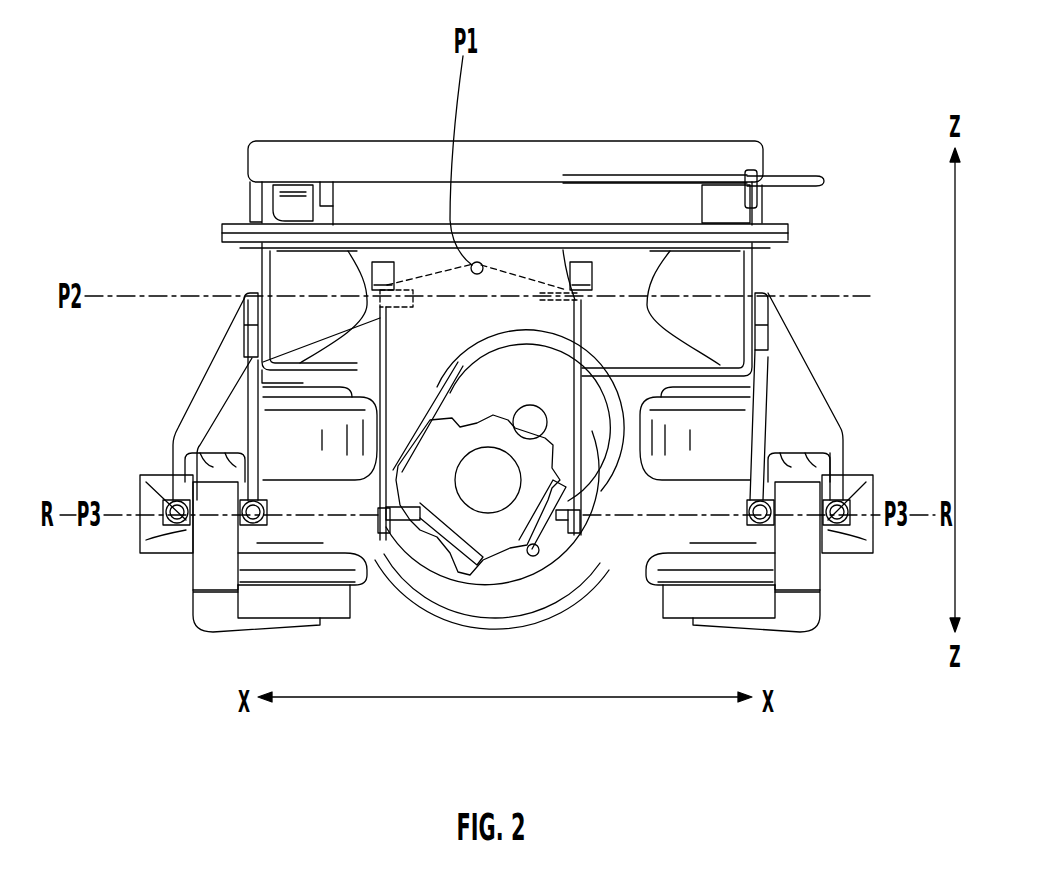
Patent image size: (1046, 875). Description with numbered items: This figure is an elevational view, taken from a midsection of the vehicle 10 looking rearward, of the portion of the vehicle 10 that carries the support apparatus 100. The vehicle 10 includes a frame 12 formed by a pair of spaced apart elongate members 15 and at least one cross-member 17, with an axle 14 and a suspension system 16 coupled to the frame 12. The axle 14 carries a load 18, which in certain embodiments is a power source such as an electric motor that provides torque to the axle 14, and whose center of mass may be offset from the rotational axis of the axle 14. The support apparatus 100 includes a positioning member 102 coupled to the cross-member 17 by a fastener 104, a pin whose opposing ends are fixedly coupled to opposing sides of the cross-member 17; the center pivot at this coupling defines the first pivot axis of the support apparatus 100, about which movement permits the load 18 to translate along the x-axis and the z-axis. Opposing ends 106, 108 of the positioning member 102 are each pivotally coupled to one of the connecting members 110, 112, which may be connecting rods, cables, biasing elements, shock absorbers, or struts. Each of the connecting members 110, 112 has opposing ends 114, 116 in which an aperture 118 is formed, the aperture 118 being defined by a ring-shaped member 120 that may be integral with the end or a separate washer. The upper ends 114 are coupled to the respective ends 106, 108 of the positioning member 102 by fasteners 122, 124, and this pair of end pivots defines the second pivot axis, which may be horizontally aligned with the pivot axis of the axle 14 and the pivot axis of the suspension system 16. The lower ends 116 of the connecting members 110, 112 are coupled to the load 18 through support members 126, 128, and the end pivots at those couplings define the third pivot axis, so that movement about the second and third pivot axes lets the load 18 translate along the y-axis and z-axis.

The vehicle 10 is at (184, 110).
The frame 12 is at (757, 273).
The axle 14 is at (602, 578).
The elongate members 15 is at (262, 280).
The suspension system 16 is at (812, 380).
The cross-member 17 is at (600, 305).
The load 18 is at (420, 435).
The support apparatus 100 is at (421, 262).
The positioning member 102 is at (545, 285).
The fastener 104 is at (463, 260).
The end of positioning member 106 is at (388, 262).
The end of positioning member 108 is at (560, 290).
The connecting member 110 is at (378, 283).
The connecting member 112 is at (578, 433).
The end of connecting member 114 is at (380, 290).
The end of connecting member 116 is at (378, 510).
The aperture 118 is at (383, 285).
The ring-shaped member 120 is at (393, 318).
The fastener 122 is at (413, 316).
The fastener 124 is at (567, 307).
The support member 126 is at (438, 535).
The support member 128 is at (550, 560).